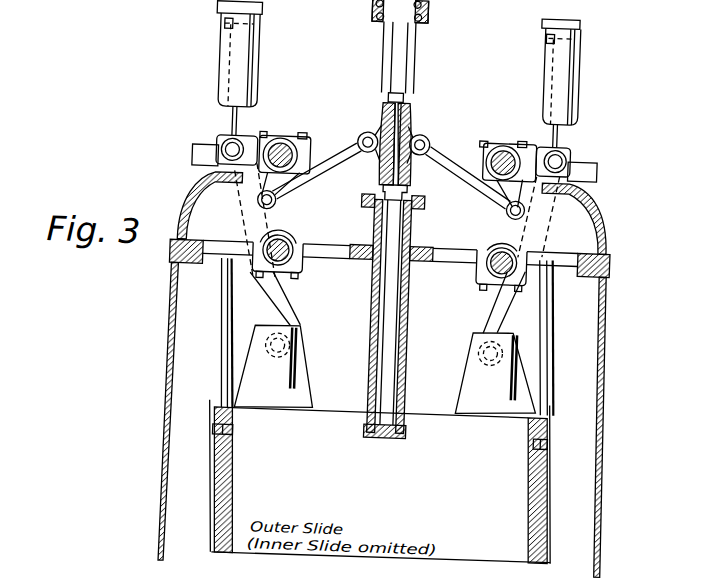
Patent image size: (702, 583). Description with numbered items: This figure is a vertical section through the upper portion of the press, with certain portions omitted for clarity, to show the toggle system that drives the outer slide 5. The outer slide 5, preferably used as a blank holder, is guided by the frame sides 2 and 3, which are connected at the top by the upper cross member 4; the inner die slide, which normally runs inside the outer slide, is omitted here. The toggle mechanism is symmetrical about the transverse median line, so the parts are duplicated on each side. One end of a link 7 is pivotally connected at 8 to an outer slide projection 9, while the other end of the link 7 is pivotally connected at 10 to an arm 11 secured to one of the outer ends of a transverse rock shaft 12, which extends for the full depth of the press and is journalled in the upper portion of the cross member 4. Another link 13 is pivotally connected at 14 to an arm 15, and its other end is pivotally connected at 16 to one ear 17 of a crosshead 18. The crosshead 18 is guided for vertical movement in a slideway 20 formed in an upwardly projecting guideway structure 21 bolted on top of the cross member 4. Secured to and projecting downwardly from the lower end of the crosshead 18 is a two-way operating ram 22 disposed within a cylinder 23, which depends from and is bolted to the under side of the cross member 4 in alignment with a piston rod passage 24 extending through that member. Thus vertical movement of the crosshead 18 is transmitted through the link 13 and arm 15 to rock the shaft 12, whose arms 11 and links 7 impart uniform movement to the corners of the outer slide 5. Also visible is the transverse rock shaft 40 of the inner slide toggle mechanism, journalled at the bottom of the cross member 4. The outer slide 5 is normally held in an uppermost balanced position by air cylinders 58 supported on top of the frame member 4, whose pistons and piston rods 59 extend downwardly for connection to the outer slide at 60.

The frame side 2 is at (172, 348).
The frame side 3 is at (609, 362).
The upper cross member 4 is at (603, 217).
The outer slide 5 is at (241, 471).
The link 7 is at (280, 303).
The pivotal connection 8 is at (289, 341).
The outer slide projection 9 is at (296, 361).
The pivotal connection 10 is at (222, 148).
The arm 11 is at (256, 145).
The transverse rock shaft 12 is at (294, 160).
The link 13 is at (312, 173).
The pivotal connection 14 is at (272, 209).
The arm 15 is at (263, 189).
The pivotal connection 16 is at (357, 135).
The ear 17 is at (376, 127).
The crosshead 18 is at (405, 106).
The slideway 20 is at (392, 64).
The guideway structure 21 is at (360, 54).
The two-way operating ram 22 is at (396, 407).
The cylinder 23 is at (410, 362).
The piston rod passage 24 is at (410, 231).
The transverse rock shaft 40 is at (289, 245).
The air cylinder 58 is at (210, 20).
The piston rod 59 is at (228, 122).
The connection 60 is at (239, 441).